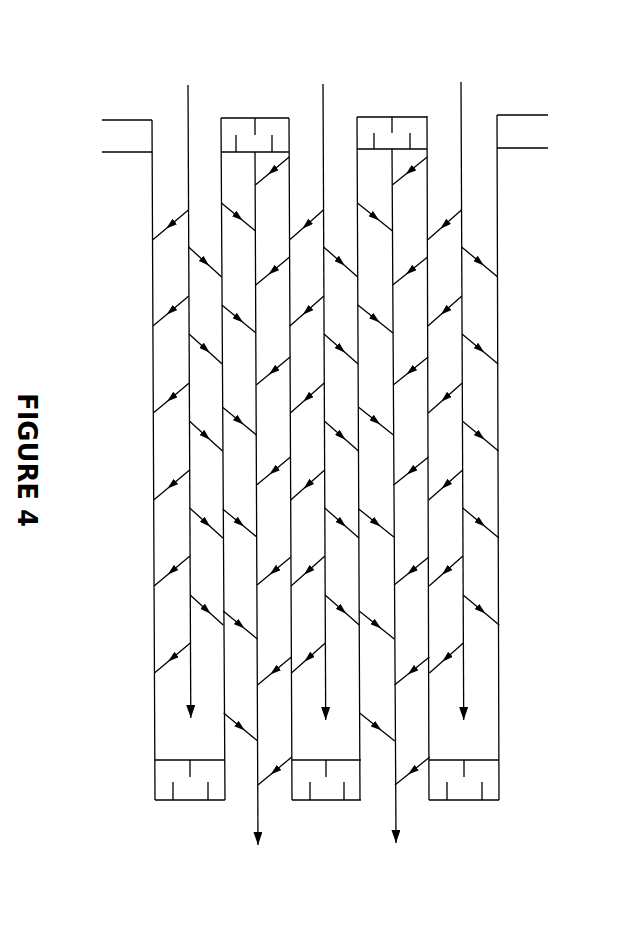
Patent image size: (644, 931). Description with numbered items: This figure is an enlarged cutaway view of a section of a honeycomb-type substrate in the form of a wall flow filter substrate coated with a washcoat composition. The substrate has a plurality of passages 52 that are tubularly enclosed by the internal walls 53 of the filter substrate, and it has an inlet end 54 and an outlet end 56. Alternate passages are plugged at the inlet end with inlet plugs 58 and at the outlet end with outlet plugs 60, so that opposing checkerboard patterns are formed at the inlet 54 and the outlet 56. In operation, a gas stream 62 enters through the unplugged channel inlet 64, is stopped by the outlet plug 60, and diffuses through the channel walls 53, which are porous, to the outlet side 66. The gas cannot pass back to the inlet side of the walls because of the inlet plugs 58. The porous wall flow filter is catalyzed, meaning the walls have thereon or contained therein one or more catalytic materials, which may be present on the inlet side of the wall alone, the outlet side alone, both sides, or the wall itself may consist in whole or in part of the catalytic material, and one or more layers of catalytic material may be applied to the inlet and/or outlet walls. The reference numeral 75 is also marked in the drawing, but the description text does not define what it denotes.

The passages 52 is at (188, 153).
The internal walls 53 is at (292, 428).
The inlet end 54 is at (539, 98).
The outlet end 56 is at (500, 805).
The inlet plugs 58 is at (110, 121).
The outlet plugs 60 is at (186, 802).
The gas stream 62 is at (326, 156).
The unplugged channel inlet 64 is at (338, 117).
The outlet side 66 is at (312, 803).
The filtered gas flow through wall 75 is at (190, 426).